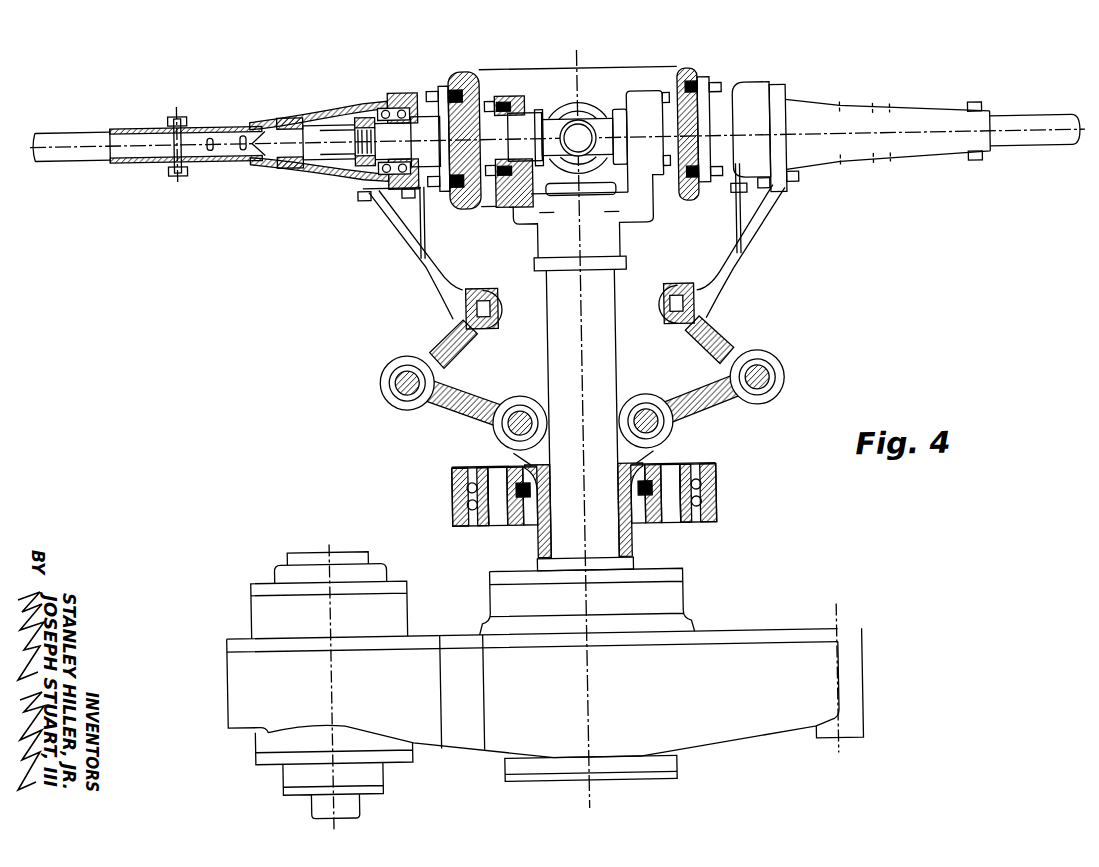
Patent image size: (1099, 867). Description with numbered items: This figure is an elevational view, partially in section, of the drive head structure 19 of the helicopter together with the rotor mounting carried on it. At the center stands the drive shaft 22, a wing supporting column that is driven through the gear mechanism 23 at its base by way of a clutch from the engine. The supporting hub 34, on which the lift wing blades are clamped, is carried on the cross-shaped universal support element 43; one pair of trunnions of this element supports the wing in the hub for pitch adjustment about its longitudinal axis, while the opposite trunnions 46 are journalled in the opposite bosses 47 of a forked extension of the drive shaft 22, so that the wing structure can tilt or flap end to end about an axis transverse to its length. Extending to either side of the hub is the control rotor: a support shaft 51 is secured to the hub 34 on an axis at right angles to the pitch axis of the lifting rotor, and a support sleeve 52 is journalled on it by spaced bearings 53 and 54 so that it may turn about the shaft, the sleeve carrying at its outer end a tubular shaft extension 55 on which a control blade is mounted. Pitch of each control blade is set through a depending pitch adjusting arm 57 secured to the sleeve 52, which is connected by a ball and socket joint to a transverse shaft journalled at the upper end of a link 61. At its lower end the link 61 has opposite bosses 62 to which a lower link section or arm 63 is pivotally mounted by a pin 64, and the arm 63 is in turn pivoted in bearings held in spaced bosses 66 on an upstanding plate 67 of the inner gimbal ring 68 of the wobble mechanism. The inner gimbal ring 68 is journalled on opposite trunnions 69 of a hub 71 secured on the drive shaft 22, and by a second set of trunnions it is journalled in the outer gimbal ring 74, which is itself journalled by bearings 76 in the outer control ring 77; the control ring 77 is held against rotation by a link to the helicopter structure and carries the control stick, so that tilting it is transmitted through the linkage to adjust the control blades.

The drive head structure 19 is at (598, 68).
The drive shaft 22 is at (614, 360).
The gear mechanism 23 is at (774, 632).
The supporting hub 34 is at (470, 72).
The cross-shaped universal support element 43 is at (596, 118).
The trunnions 46 is at (528, 113).
The bosses 47 is at (498, 95).
The support shaft 51 is at (340, 146).
The support sleeve 52 is at (333, 104).
The bearing 53 is at (300, 113).
The bearing 54 is at (379, 90).
The tubular shaft extension 55 is at (127, 154).
The pitch adjusting arm 57 is at (420, 272).
The link 61 is at (452, 354).
The bosses 62 is at (396, 364).
The lower link section or arm 63 is at (458, 412).
The pin 64 is at (398, 388).
The bosses 66 is at (500, 445).
The upstanding plate 67 is at (548, 460).
The inner gimbal ring 68 is at (507, 527).
The trunnions 69 is at (535, 525).
The hub 71 is at (626, 532).
The outer gimbal ring 74 is at (474, 526).
The bearings 76 is at (458, 509).
The outer control ring 77 is at (446, 478).